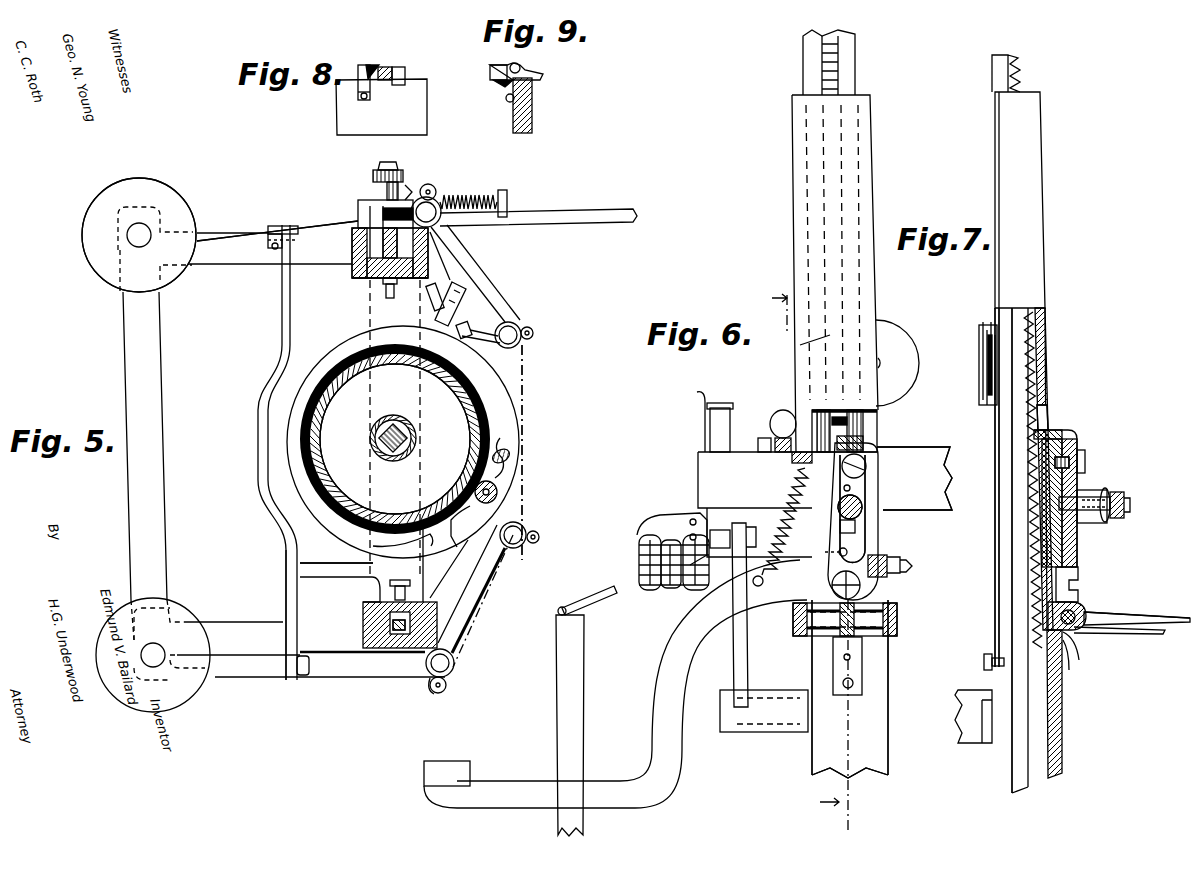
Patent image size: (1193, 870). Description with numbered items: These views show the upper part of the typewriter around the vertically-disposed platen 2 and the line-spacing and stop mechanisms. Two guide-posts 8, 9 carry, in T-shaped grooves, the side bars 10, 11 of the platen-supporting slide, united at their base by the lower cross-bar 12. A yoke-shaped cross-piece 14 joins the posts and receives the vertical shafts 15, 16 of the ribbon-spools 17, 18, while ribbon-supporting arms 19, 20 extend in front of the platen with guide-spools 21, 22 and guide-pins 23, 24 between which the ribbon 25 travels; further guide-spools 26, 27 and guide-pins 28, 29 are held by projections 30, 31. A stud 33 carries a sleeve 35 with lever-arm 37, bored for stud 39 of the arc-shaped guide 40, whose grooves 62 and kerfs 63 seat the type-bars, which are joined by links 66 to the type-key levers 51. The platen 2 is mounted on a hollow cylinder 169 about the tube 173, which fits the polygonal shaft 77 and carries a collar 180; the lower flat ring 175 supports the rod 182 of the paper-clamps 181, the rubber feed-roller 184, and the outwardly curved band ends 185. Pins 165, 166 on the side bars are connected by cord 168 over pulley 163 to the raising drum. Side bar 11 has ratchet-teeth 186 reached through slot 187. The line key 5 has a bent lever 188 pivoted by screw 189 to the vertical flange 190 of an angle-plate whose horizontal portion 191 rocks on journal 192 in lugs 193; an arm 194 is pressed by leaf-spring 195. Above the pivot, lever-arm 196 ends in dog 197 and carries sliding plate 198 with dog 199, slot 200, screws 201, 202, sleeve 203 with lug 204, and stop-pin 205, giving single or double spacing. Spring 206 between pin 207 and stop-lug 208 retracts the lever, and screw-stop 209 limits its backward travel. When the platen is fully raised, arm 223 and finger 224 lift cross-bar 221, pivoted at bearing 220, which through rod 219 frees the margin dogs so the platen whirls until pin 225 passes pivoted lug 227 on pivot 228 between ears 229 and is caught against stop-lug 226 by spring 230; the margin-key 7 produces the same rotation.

In FIG. 5, the platen 2 is at (488, 421).
In FIG. 5, the platen-raising or line key 5 is at (440, 762).
In FIG. 6, the margin-key 7 is at (813, 554).
In FIG. 5, the guide-post 8 is at (384, 646).
In FIG. 5, the guide-post 9 is at (362, 262).
In FIG. 6, the guide-post 9 is at (840, 436).
In FIG. 7, the guide-post 9 is at (1021, 442).
In FIG. 5, the side bar 10 is at (400, 646).
In FIG. 5, the side bar 11 is at (375, 276).
In FIG. 6, the side bar 11 is at (850, 76).
In FIG. 7, the side bar 11 is at (992, 73).
In FIG. 5, the lower cross-bar 12 is at (410, 583).
In FIG. 7, the lower cross-bar 12 is at (985, 736).
In FIG. 5, the yoke-shaped cross-piece 14 is at (165, 508).
In FIG. 6, the yoke-shaped cross-piece 14 is at (914, 470).
In FIG. 5, the vertical shaft 15 is at (139, 228).
In FIG. 5, the vertical shaft 16 is at (154, 648).
In FIG. 5, the ribbon-spool 17 is at (139, 235).
In FIG. 5, the ribbon-spool 18 is at (125, 612).
In FIG. 6, the ribbon-supporting arm 19 is at (698, 474).
In FIG. 8, the ribbon-supporting arm 19 is at (381, 107).
In FIG. 9, the ribbon-supporting arm 19 is at (533, 106).
In FIG. 5, the ribbon-supporting arm 20 is at (481, 601).
In FIG. 5, the guide-spool 21 is at (512, 324).
In FIG. 6, the guide-spool 21 is at (731, 420).
In FIG. 5, the guide-spool 22 is at (511, 532).
In FIG. 5, the guide-pin 23 is at (534, 333).
In FIG. 6, the guide-pin 23 is at (703, 410).
In FIG. 5, the guide-pin 24 is at (538, 537).
In FIG. 5, the ribbon 25 is at (524, 458).
In FIG. 5, the guide-spool 26 is at (449, 665).
In FIG. 5, the guide-spool 27 is at (432, 205).
In FIG. 5, the guide-pin 28 is at (447, 688).
In FIG. 5, the guide-pin 29 is at (437, 178).
In FIG. 5, the projection 30 is at (432, 692).
In FIG. 5, the projection 31 is at (412, 190).
In FIG. 6, the stud 33 is at (812, 730).
In FIG. 6, the sleeve 35 is at (772, 690).
In FIG. 6, the lever-arm 37 is at (749, 651).
In FIG. 6, the stud 39 is at (720, 539).
In FIG. 6, the arc-shaped guide 40 is at (667, 522).
In FIG. 6, the angular lever 51 is at (570, 725).
In FIG. 6, the longitudinal groove 62 is at (655, 588).
In FIG. 6, the transverse kerf 63 is at (640, 554).
In FIG. 6, the link 66 is at (590, 596).
In FIG. 5, the polygonal-faced vertical shaft 77 is at (383, 452).
In FIG. 6, the upper grooved pulley 163 is at (882, 330).
In FIG. 7, the upper grooved pulley 163 is at (980, 322).
In FIG. 5, the pin 165 is at (396, 582).
In FIG. 5, the pin 166 is at (386, 300).
In FIG. 7, the pin 166 is at (982, 663).
In FIG. 7, the cord 168 is at (994, 582).
In FIG. 5, the hollow metal cylinder 169 is at (317, 422).
In FIG. 5, the vertical cylindrical tube 173 is at (417, 440).
In FIG. 5, the lower flat ring 175 is at (492, 392).
In FIG. 7, the collar 180 is at (1011, 560).
In FIG. 5, the paper-clamp 181 is at (498, 478).
In FIG. 5, the vertical rod 182 is at (508, 452).
In FIG. 5, the rubber roller 184 is at (498, 494).
In FIG. 5, the outwardly-curved band end 185 is at (478, 546).
In FIG. 6, the ratchet-teeth 186 is at (838, 410).
In FIG. 7, the ratchet-teeth 186 is at (1038, 393).
In FIG. 6, the slot 187 is at (810, 345).
In FIG. 7, the slot 187 is at (1046, 418).
In FIG. 5, the bent lever 188 is at (572, 209).
In FIG. 6, the bent lever 188 is at (632, 684).
In FIG. 7, the bent lever 188 is at (1087, 613).
In FIG. 6, the bolt or screw 189 is at (834, 578).
In FIG. 7, the bolt or screw 189 is at (1078, 587).
In FIG. 6, the vertical flange 190 is at (882, 580).
In FIG. 6, the horizontal portion 191 is at (872, 637).
In FIG. 7, the horizontal portion 191 is at (1140, 614).
In FIG. 6, the journal 192 is at (897, 620).
In FIG. 7, the journal 192 is at (1081, 628).
In FIG. 6, the lug 193 is at (787, 620).
In FIG. 7, the lug 193 is at (1069, 637).
In FIG. 6, the arm 194 is at (868, 640).
In FIG. 7, the arm 194 is at (1180, 623).
In FIG. 6, the bent leaf-spring 195 is at (850, 697).
In FIG. 7, the bent leaf-spring 195 is at (1130, 634).
In FIG. 6, the lever-arm 196 is at (878, 502).
In FIG. 7, the lever-arm 196 is at (1068, 490).
In FIG. 5, the dog 197 is at (445, 240).
In FIG. 6, the dog 197 is at (866, 446).
In FIG. 7, the dog 197 is at (1034, 434).
In FIG. 5, the sliding plate 198 is at (358, 222).
In FIG. 6, the sliding plate 198 is at (869, 493).
In FIG. 7, the sliding plate 198 is at (1077, 448).
In FIG. 5, the dog 199 is at (352, 262).
In FIG. 6, the dog 199 is at (866, 426).
In FIG. 7, the dog 199 is at (1070, 432).
In FIG. 6, the longitudinal slot 200 is at (844, 488).
In FIG. 5, the screw 201 is at (365, 205).
In FIG. 6, the screw 201 is at (866, 470).
In FIG. 7, the screw 201 is at (1085, 463).
In FIG. 6, the screw 202 is at (838, 507).
In FIG. 7, the screw 202 is at (1110, 499).
In FIG. 5, the sleeve 203 is at (382, 193).
In FIG. 6, the sleeve 203 is at (864, 514).
In FIG. 7, the sleeve 203 is at (1124, 511).
In FIG. 6, the lug 204 is at (840, 527).
In FIG. 7, the lug 204 is at (1108, 522).
In FIG. 6, the stop-pin 205 is at (839, 552).
In FIG. 5, the spring 206 is at (482, 191).
In FIG. 6, the spring 206 is at (782, 505).
In FIG. 5, the pin 207 is at (508, 205).
In FIG. 6, the pin 207 is at (764, 583).
In FIG. 6, the stop-lug 208 is at (792, 457).
In FIG. 6, the adjustable screw-stop 209 is at (913, 568).
In FIG. 7, the adjustable screw-stop 209 is at (991, 552).
In FIG. 5, the vertical rod 219 is at (303, 678).
In FIG. 5, the bearing 220 is at (272, 250).
In FIG. 5, the transverse cross-bar 221 is at (280, 360).
In FIG. 5, the arm 223 is at (318, 570).
In FIG. 5, the upward-extending finger 224 is at (286, 578).
In FIG. 5, the pin 225 is at (418, 366).
In FIG. 8, the pin 225 is at (384, 67).
In FIG. 5, the stop-lug 226 is at (488, 316).
In FIG. 6, the stop-lug 226 is at (764, 438).
In FIG. 8, the stop-lug 226 is at (405, 72).
In FIG. 9, the stop-lug 226 is at (526, 70).
In FIG. 5, the pivoted lug 227 is at (455, 330).
In FIG. 6, the pivoted lug 227 is at (787, 434).
In FIG. 8, the pivoted lug 227 is at (362, 63).
In FIG. 9, the pivoted lug 227 is at (492, 66).
In FIG. 5, the pivot 228 is at (430, 292).
In FIG. 5, the ear 229 is at (468, 300).
In FIG. 6, the ear 229 is at (793, 410).
In FIG. 8, the ear 229 is at (374, 64).
In FIG. 8, the spring 230 is at (358, 92).
In FIG. 9, the spring 230 is at (508, 94).